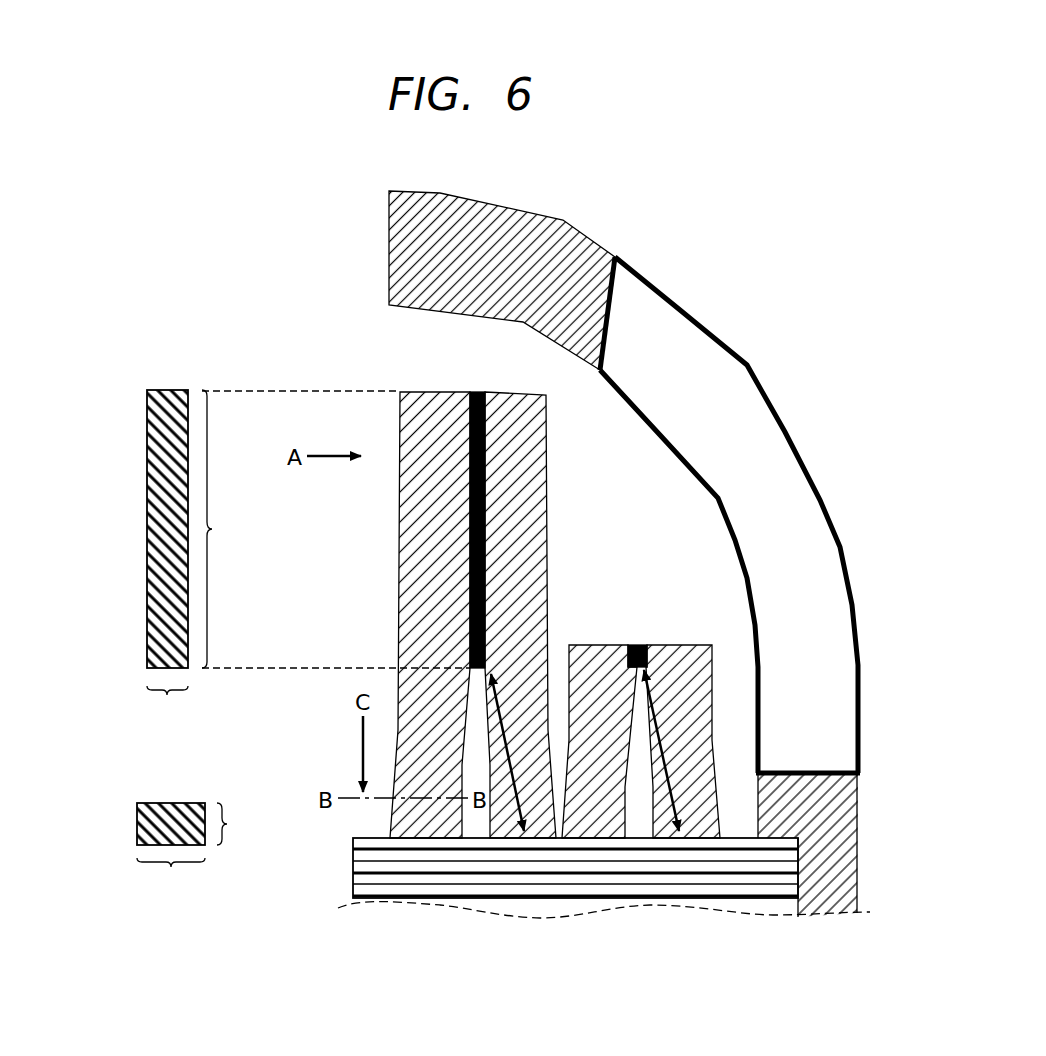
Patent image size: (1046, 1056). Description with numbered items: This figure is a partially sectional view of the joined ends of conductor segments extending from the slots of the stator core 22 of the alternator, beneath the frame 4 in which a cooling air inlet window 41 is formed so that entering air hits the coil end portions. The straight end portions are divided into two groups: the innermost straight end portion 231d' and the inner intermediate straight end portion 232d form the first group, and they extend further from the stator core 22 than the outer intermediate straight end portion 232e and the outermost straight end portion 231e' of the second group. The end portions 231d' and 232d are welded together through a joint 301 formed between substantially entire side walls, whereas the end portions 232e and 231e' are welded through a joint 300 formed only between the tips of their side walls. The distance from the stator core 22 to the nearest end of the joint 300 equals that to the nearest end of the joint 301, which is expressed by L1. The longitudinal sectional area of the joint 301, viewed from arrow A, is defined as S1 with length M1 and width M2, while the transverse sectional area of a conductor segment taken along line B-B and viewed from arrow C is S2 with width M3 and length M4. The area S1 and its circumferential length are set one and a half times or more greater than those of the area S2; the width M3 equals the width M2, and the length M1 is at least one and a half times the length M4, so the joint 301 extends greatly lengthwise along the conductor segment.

The frame 4 is at (598, 229).
The cooling air inlet window 41 is at (779, 485).
The innermost straight end portion 231d' is at (430, 592).
The inner intermediate straight end portion 232d is at (507, 441).
The joint 301 is at (494, 523).
The joint 300 is at (637, 644).
The outer intermediate straight end portion 232e is at (601, 677).
The outermost straight end portion 231e' is at (683, 720).
The distance L1 is at (518, 775).
The stator core 22 is at (645, 916).
The longitudinal sectional area of the joint S1 is at (122, 578).
The transverse sectional area of the conductor segment S2 is at (115, 910).
The length of the area S1 M1 is at (222, 529).
The width of the sectional area S1 M2 is at (167, 707).
The width of the conductor segment M3 is at (237, 824).
The length of the area S2 M4 is at (171, 877).